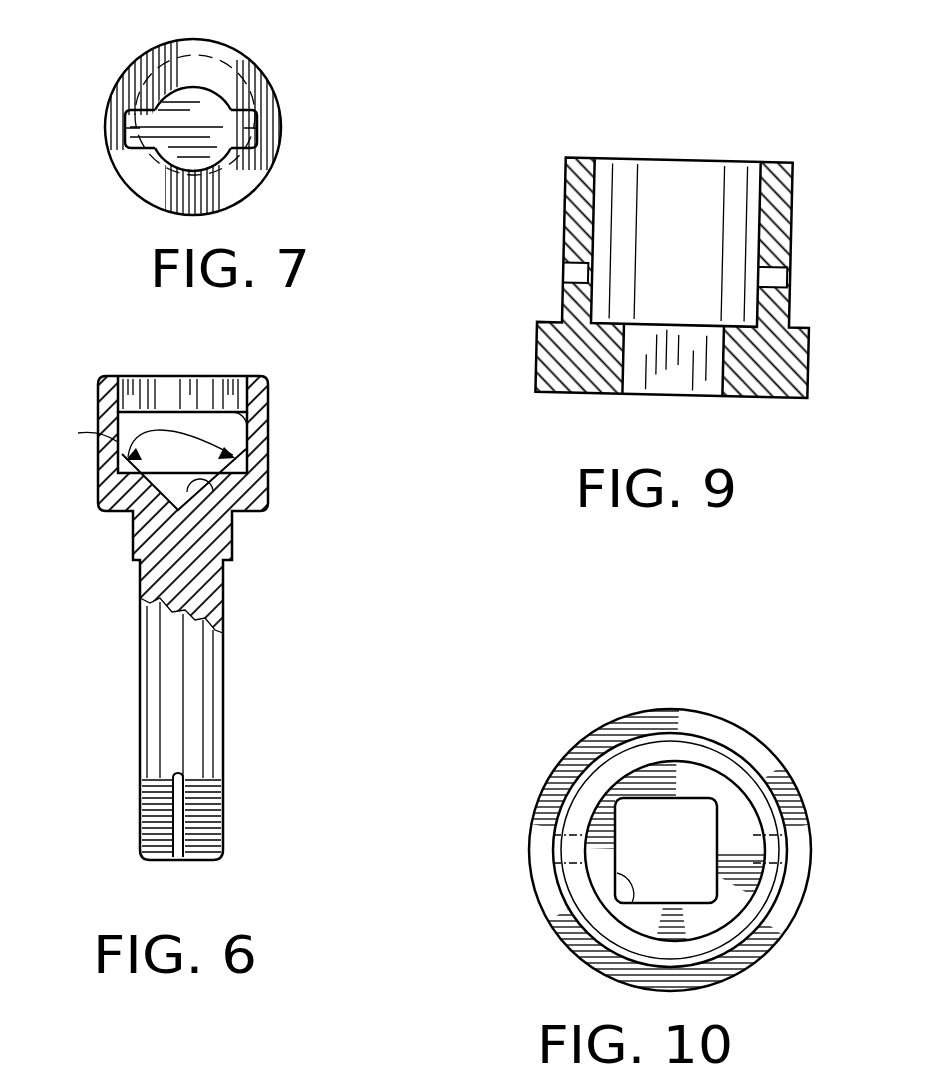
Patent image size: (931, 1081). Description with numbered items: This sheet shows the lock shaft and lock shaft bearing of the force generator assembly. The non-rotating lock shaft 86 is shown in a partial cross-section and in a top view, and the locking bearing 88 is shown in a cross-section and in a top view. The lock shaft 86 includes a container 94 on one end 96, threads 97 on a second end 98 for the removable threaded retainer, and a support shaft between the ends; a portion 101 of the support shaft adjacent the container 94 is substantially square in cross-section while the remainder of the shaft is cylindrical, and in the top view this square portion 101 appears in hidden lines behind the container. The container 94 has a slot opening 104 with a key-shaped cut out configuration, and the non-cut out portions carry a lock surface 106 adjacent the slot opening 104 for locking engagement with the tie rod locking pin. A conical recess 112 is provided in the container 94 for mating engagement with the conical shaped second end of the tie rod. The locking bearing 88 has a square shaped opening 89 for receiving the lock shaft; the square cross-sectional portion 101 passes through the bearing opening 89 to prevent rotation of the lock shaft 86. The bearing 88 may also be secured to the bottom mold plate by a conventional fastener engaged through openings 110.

In FIG. 7, the lock shaft 86 is at (142, 62).
In FIG. 6, the lock shaft 86 is at (100, 420).
In FIG. 9, the locking bearing 88 is at (562, 181).
In FIG. 10, the locking bearing 88 is at (557, 793).
In FIG. 9, the square shaped opening 89 is at (622, 365).
In FIG. 10, the square shaped opening 89 is at (617, 874).
In FIG. 7, the container 94 is at (257, 175).
In FIG. 6, the container 94 is at (260, 453).
In FIG. 6, the one end 96 is at (135, 370).
In FIG. 6, the threads 97 is at (203, 812).
In FIG. 6, the second end 98 is at (220, 875).
In FIG. 7, the portion of the support shaft 101 is at (212, 72).
In FIG. 6, the portion of the support shaft 101 is at (203, 530).
In FIG. 7, the slot opening 104 is at (258, 128).
In FIG. 6, the slot opening 104 is at (185, 390).
In FIG. 6, the lock surface 106 is at (232, 425).
In FIG. 9, the openings 110 is at (562, 263).
In FIG. 10, the openings 110 is at (572, 847).
In FIG. 6, the conical recess 112 is at (203, 482).